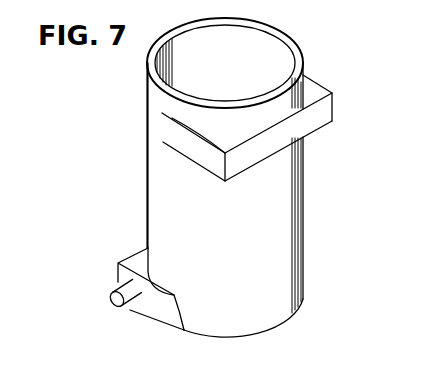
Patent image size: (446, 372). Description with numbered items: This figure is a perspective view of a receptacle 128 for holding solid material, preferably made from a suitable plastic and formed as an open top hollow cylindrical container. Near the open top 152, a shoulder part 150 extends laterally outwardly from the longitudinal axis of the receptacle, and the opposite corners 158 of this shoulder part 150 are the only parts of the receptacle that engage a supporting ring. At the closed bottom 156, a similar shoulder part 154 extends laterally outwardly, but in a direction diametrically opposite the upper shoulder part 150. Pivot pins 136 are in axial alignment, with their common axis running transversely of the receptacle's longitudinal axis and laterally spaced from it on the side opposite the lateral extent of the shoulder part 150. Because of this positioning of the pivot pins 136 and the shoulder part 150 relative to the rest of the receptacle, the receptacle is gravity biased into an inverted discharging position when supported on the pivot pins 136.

The cylindrical housing 128 is at (142, 166).
The open top 152 is at (267, 47).
The shoulder part 150 is at (317, 83).
The opposite corners 158 is at (334, 111).
The shoulder part 154 is at (117, 264).
The pivot pins 136 is at (128, 309).
The closed bottom 156 is at (200, 335).